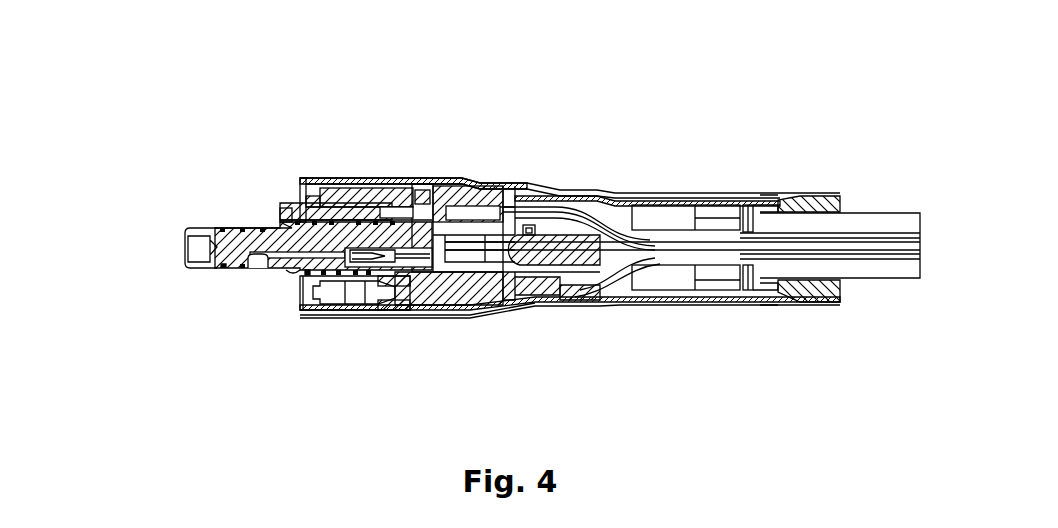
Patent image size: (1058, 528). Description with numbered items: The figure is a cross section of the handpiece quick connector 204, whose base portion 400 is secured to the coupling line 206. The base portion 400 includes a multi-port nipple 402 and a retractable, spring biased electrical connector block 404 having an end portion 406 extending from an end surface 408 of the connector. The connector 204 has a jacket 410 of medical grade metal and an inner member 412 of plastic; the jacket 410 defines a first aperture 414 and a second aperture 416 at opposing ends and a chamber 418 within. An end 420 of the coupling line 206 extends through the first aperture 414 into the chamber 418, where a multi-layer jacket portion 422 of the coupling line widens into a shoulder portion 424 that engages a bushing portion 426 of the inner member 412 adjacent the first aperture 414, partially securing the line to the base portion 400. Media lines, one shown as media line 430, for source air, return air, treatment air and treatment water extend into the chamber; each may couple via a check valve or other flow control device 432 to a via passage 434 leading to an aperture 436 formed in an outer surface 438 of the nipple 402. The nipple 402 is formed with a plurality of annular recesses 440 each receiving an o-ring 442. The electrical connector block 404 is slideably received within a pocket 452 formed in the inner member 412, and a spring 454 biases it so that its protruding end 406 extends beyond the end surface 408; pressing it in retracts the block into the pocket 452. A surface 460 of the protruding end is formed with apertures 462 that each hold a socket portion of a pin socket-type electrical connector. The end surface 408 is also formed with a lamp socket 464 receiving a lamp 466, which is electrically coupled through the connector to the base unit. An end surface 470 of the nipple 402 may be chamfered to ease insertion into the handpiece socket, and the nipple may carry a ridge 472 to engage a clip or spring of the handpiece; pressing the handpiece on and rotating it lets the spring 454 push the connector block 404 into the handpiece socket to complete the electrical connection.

The quick connector 204 is at (611, 96).
The coupling line 206 is at (892, 280).
The base portion 400 is at (520, 178).
The multi-port nipple 402 is at (188, 227).
The electrical connector block 404 is at (296, 218).
The end portion 406 is at (292, 203).
The end surface 408 is at (306, 200).
The jacket 410 is at (452, 186).
The inner member 412 is at (380, 188).
The first aperture 414 is at (847, 197).
The second aperture 416 is at (301, 178).
The chamber 418 is at (505, 312).
The end of the coupling line 420 is at (782, 198).
The jacket portion 422 is at (857, 285).
The shoulder portion 424 is at (720, 212).
The bushing portion 426 is at (745, 205).
The media line 430 is at (607, 302).
The flow control device 432 is at (383, 288).
The via passage 434 is at (292, 272).
The aperture 436 is at (262, 268).
The outer surface 438 is at (222, 265).
The annular recesses 440 is at (247, 268).
The o-ring 442 is at (280, 222).
The pocket 452 is at (330, 203).
The spring 454 is at (413, 184).
The surface of the protruding end 460 is at (280, 210).
The apertures 462 is at (283, 208).
The lamp socket 464 is at (303, 310).
The lamp 466 is at (330, 304).
The end surface of the nipple 470 is at (186, 236).
The ridge 472 is at (306, 276).